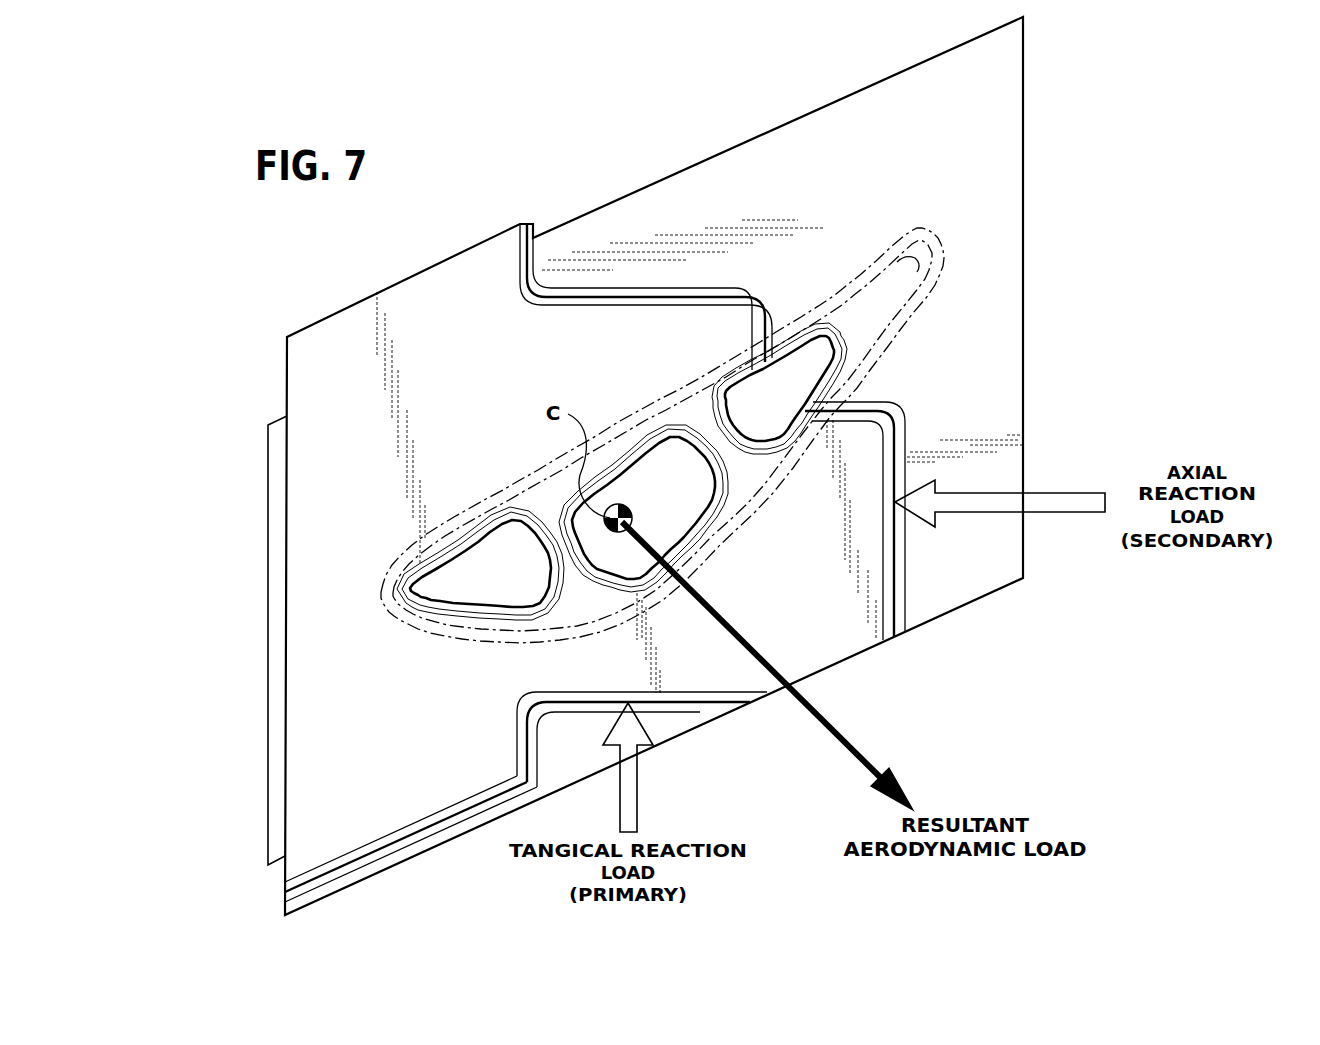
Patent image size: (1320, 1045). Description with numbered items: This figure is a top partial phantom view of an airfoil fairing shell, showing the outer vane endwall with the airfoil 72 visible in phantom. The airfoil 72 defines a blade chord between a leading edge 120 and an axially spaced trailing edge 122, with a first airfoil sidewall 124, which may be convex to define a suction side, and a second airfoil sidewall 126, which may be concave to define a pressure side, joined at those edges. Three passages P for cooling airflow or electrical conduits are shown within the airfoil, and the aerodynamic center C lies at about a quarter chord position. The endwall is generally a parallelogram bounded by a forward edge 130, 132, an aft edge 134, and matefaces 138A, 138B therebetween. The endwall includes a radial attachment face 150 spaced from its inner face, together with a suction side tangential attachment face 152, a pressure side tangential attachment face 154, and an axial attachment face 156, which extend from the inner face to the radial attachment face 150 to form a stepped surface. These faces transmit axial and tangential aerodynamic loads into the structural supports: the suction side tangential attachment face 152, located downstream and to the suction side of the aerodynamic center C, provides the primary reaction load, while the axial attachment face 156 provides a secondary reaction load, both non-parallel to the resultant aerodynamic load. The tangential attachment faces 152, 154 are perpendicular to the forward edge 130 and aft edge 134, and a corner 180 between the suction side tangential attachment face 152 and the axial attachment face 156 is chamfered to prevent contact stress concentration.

The airfoil 72 is at (852, 313).
The leading edge 120 is at (391, 594).
The trailing edge 122 is at (920, 255).
The first airfoil sidewall 124 is at (753, 482).
The second airfoil sidewall 126 is at (684, 394).
The forward edge 130 is at (268, 648).
The forward edge 132 is at (268, 771).
The aft edge 134 is at (1023, 418).
The mateface 138A is at (441, 846).
The mateface 138B is at (572, 222).
The radial attachment face 150 is at (398, 537).
The suction side tangential attachment face 152 is at (688, 703).
The pressure side tangential attachment face 154 is at (707, 297).
The axial attachment face 156 is at (895, 571).
The corner 180 is at (863, 650).